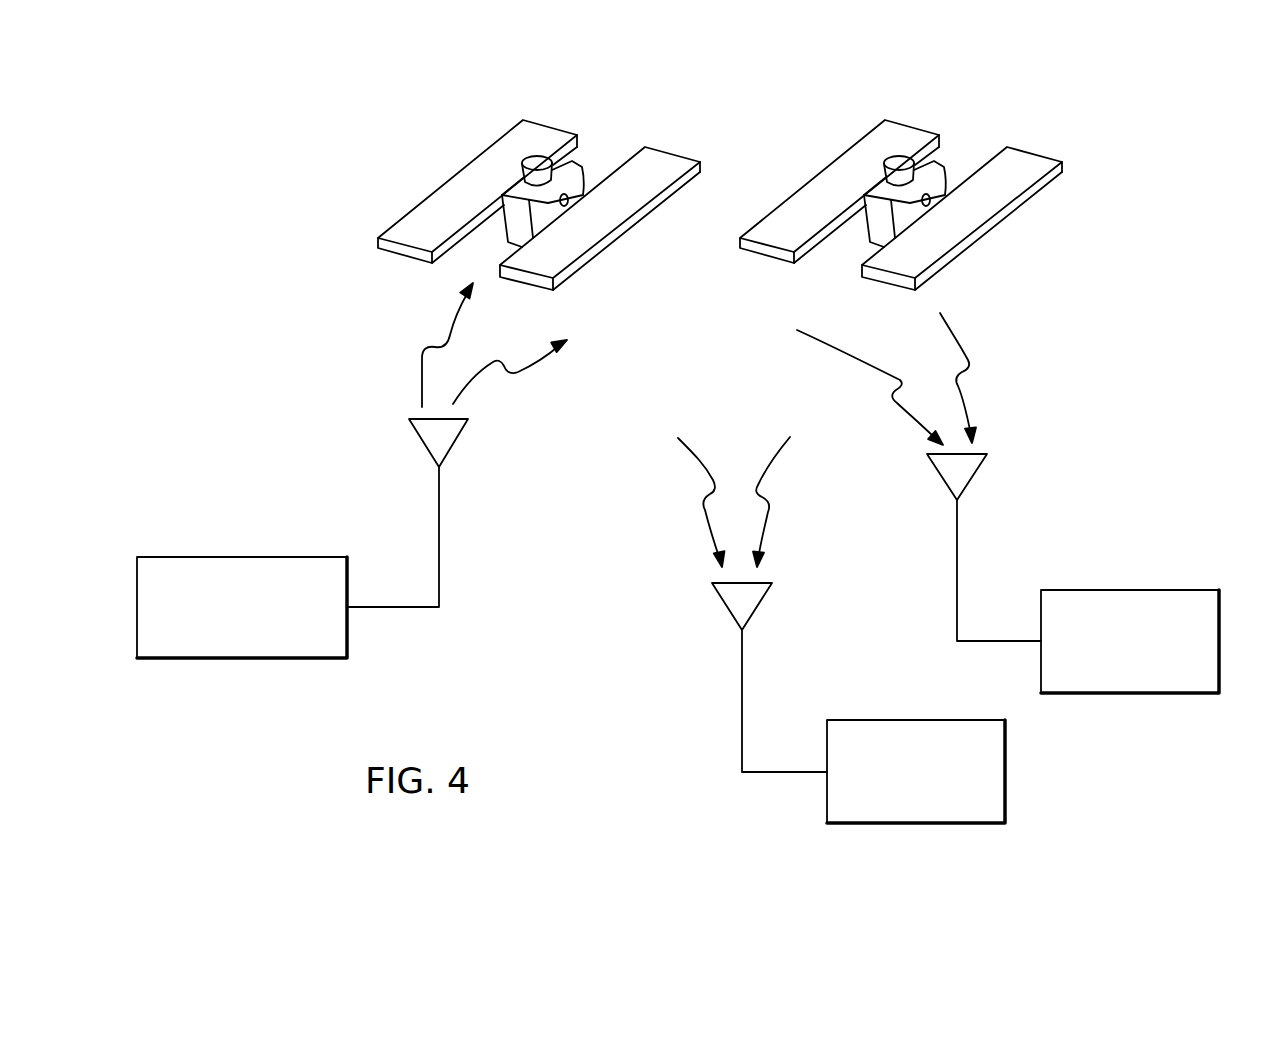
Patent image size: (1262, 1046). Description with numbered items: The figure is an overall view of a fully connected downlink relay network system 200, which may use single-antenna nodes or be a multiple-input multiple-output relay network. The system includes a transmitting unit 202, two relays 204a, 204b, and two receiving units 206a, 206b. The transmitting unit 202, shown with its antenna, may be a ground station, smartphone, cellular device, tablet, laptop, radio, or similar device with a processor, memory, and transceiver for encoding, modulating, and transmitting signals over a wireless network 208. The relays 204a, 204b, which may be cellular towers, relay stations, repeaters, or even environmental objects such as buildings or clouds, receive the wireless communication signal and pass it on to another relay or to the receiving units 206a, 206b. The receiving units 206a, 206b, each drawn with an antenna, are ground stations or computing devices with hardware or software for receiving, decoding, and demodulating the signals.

The downlink relay network system 200 is at (1200, 153).
The transmitting unit 202 is at (243, 658).
The relay 204a is at (425, 160).
The relay 204b is at (1005, 265).
The receiving unit 206a is at (915, 823).
The receiving unit 206b is at (1130, 693).
The wireless network 208 is at (312, 283).